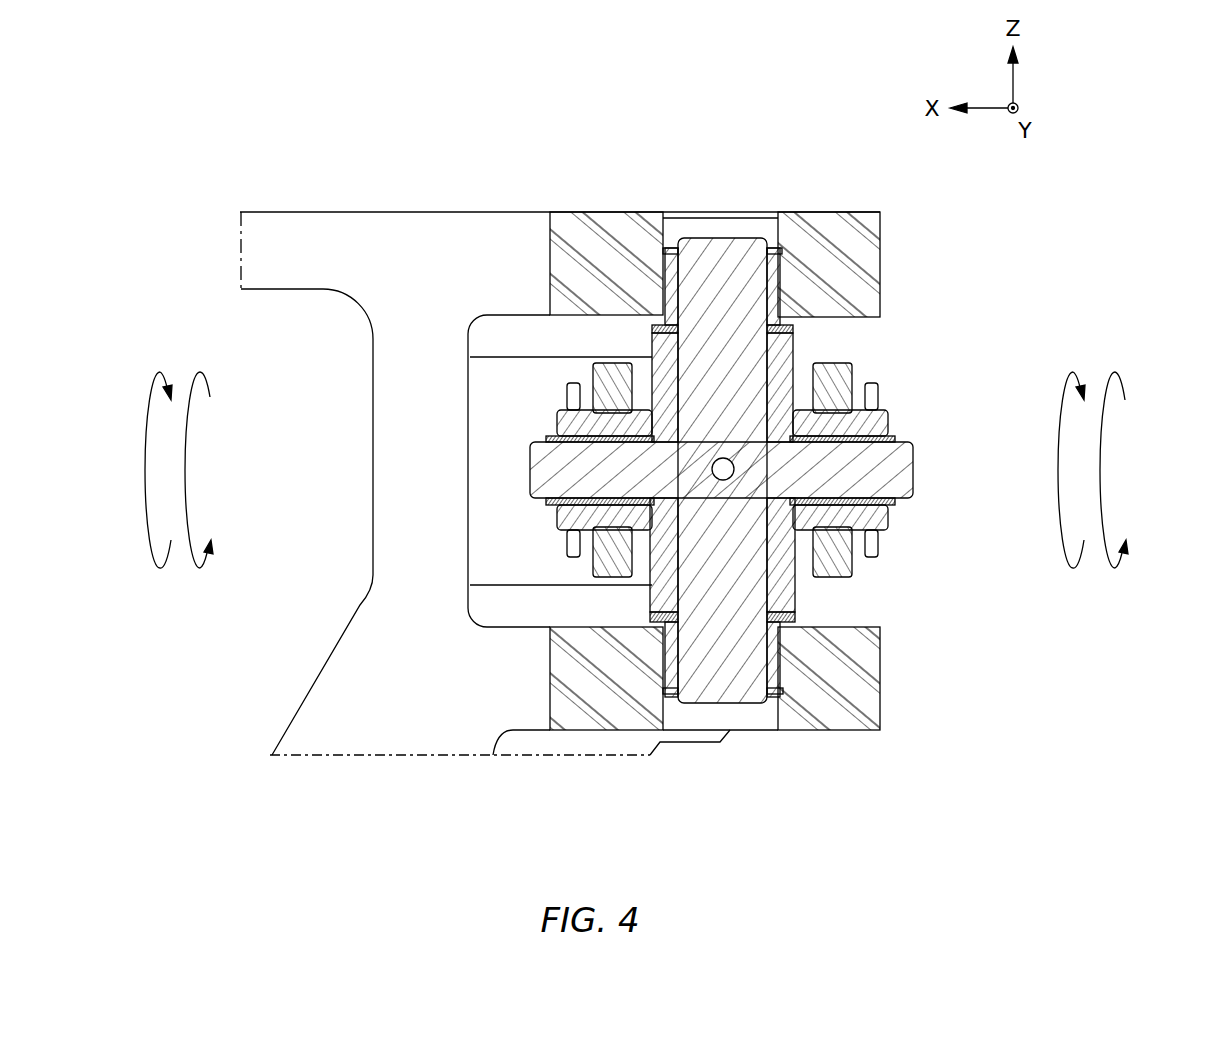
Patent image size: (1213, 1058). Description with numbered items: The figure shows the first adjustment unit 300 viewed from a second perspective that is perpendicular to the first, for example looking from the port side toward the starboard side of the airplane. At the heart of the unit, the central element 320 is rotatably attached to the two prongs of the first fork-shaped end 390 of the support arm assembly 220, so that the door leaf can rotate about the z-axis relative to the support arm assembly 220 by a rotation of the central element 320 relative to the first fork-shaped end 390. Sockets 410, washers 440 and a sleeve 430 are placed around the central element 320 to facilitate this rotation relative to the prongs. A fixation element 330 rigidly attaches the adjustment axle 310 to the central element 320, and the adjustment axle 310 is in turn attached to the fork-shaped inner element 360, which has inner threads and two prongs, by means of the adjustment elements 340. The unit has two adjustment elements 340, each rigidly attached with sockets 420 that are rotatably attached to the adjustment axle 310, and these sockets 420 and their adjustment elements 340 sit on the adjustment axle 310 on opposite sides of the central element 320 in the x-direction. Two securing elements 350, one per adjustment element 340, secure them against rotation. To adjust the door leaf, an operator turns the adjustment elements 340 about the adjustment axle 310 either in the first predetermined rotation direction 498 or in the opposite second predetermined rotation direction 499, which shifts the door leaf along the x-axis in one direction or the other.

The support arm assembly 220 is at (863, 652).
The first adjustment unit 300 is at (917, 367).
The adjustment axle 310 is at (903, 492).
The central element 320 is at (721, 262).
The fixation element 330 is at (712, 471).
The adjustment element 340 is at (567, 416).
The securing element 350 is at (877, 550).
The fork-shaped inner element 360 is at (838, 372).
The first fork-shaped end 390 is at (343, 424).
The socket 410 is at (773, 258).
The socket 420 is at (650, 434).
The sleeve 430 is at (657, 597).
The washer 440 is at (677, 694).
The first predetermined rotation direction 498 is at (199, 370).
The second predetermined rotation direction 499 is at (147, 407).